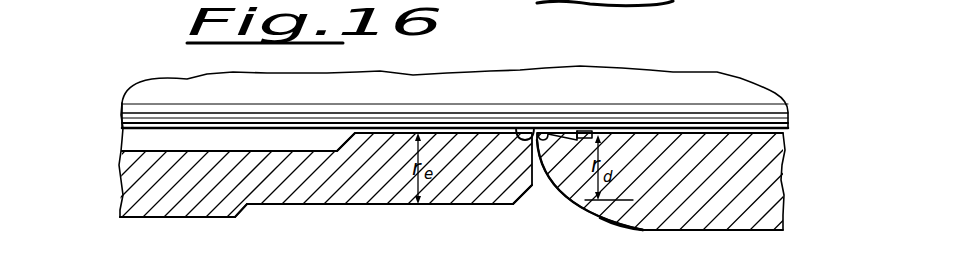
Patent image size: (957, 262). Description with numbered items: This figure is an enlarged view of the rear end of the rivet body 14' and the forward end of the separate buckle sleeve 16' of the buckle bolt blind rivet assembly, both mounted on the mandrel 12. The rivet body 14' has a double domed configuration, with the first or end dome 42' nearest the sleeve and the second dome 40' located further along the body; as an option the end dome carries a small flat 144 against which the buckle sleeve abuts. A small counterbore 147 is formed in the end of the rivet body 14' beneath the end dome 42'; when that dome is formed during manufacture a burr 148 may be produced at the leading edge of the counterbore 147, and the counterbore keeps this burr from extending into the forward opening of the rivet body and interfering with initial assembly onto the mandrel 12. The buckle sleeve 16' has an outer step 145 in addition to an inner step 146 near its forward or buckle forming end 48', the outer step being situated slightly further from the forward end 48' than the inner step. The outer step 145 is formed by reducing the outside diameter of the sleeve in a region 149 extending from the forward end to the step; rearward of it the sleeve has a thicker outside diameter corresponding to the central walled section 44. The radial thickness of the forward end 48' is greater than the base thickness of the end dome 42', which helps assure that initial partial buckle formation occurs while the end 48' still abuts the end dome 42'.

The mandrel 12 is at (455, 97).
The buckle sleeve 16' is at (315, 169).
The rivet body 14' is at (658, 181).
The inner step 146 is at (336, 142).
The small flat 144 is at (518, 128).
The burr 148 is at (556, 129).
The counterbore 147 is at (578, 129).
The central walled section 44 is at (152, 218).
The outer step 145 is at (247, 205).
The reduced outside diameter region 149 is at (383, 206).
The forward end of buckle sleeve 48' is at (518, 218).
The first or end dome 42' is at (590, 198).
The second dome 40' is at (626, 240).